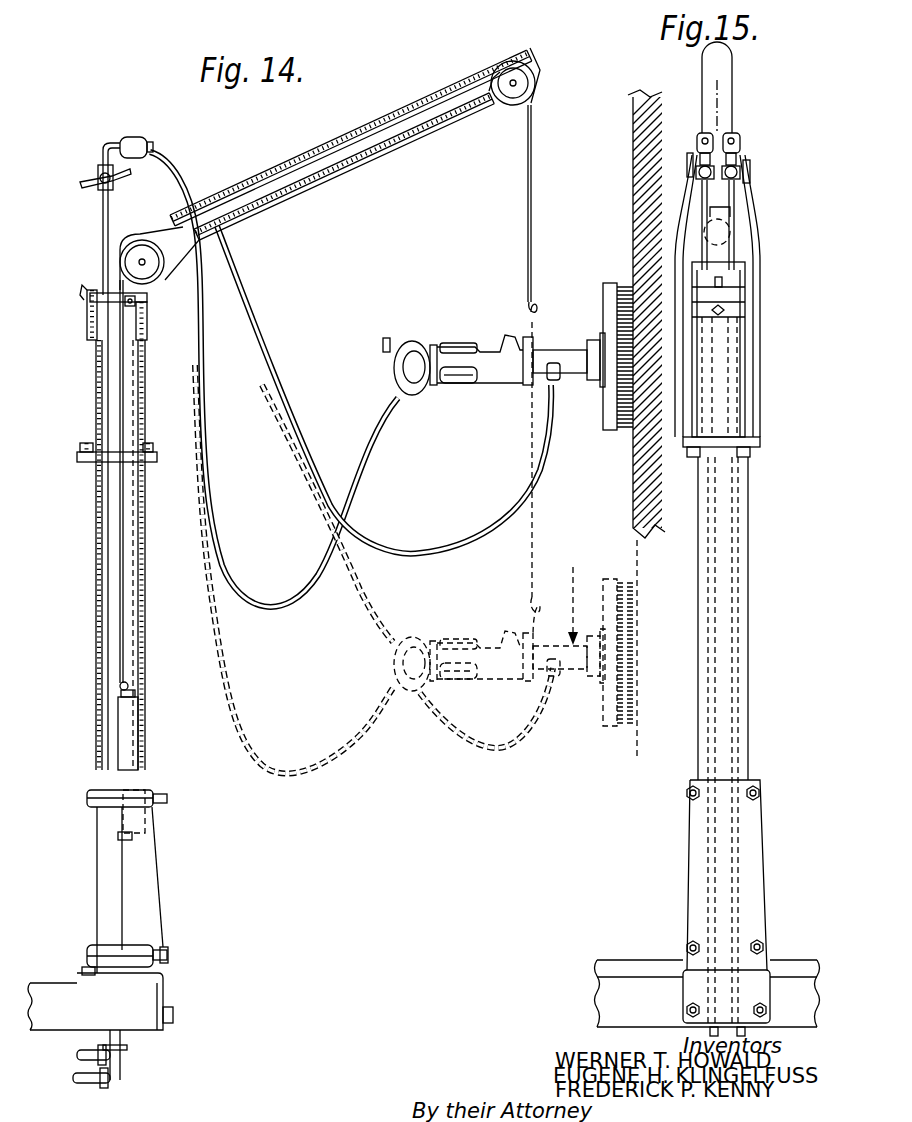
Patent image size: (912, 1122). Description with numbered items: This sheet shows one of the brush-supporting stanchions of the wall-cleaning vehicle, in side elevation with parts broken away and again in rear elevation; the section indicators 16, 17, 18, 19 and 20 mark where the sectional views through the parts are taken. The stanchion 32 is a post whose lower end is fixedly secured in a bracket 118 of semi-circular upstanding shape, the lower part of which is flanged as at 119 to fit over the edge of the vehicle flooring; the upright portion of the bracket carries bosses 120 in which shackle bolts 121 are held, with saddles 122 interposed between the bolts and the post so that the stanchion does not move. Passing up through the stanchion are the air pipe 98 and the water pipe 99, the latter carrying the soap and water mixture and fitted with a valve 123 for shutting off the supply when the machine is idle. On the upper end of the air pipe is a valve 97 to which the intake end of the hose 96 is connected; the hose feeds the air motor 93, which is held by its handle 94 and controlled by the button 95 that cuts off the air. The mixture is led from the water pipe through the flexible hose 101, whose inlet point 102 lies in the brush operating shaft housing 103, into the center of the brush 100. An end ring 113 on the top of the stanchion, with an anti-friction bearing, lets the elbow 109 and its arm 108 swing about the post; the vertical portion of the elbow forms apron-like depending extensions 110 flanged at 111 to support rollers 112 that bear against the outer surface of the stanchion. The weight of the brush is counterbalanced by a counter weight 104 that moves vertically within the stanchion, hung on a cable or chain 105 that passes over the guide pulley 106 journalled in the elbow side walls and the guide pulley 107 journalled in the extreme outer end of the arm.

In FIG. 15, the section line 16- 16 is at (745, 112).
In FIG. 14, the section line 17- 17 is at (115, 193).
In FIG. 14, the section line 18- 18 is at (547, 153).
In FIG. 14, the section line 19- 19 is at (198, 432).
In FIG. 14, the section line 20- 20 is at (217, 952).
In FIG. 14, the stanchion 32 is at (137, 640).
In FIG. 15, the stanchion 32 is at (723, 567).
In FIG. 14, the air motor 93 is at (500, 360).
In FIG. 14, the handle 94 is at (413, 342).
In FIG. 14, the control button 95 is at (385, 342).
In FIG. 14, the hose 96 is at (360, 435).
In FIG. 14, the valve 97 is at (100, 170).
In FIG. 15, the valve 97 is at (750, 173).
In FIG. 14, the air pipe 98 is at (103, 232).
In FIG. 15, the air pipe 98 is at (737, 745).
In FIG. 14, the water pipe 99 is at (80, 1052).
In FIG. 15, the water pipe 99 is at (713, 683).
In FIG. 14, the brush 100 is at (633, 275).
In FIG. 14, the flexible hose 101 is at (490, 535).
In FIG. 14, the inlet point 102 is at (553, 362).
In FIG. 14, the brush operating shaft housing 103 is at (580, 405).
In FIG. 14, the counter weight 104 is at (127, 723).
In FIG. 14, the cable or chain 105 is at (527, 245).
In FIG. 14, the guide pulley 106 is at (158, 260).
In FIG. 14, the guide pulley 107 is at (527, 86).
In FIG. 14, the arm 108 is at (391, 146).
In FIG. 15, the arm 108 is at (727, 68).
In FIG. 14, the elbow 109 is at (207, 190).
In FIG. 14, the apron-like depending extension 110 is at (131, 367).
In FIG. 15, the apron-like depending extension 110 is at (755, 410).
In FIG. 14, the flange 111 is at (157, 448).
In FIG. 15, the flange 111 is at (718, 447).
In FIG. 14, the roller 112 is at (88, 463).
In FIG. 15, the roller 112 is at (750, 452).
In FIG. 14, the end ring 113 is at (147, 317).
In FIG. 14, the bracket 118 is at (140, 873).
In FIG. 15, the bracket 118 is at (753, 893).
In FIG. 14, the flange 119 is at (157, 993).
In FIG. 15, the flange 119 is at (687, 990).
In FIG. 14, the boss 120 is at (137, 798).
In FIG. 15, the boss 120 is at (688, 795).
In FIG. 14, the shackle bolt 121 is at (87, 795).
In FIG. 15, the shackle bolt 121 is at (762, 790).
In FIG. 14, the saddle 122 is at (103, 803).
In FIG. 14, the valve 123 is at (150, 157).
In FIG. 15, the valve 123 is at (687, 167).